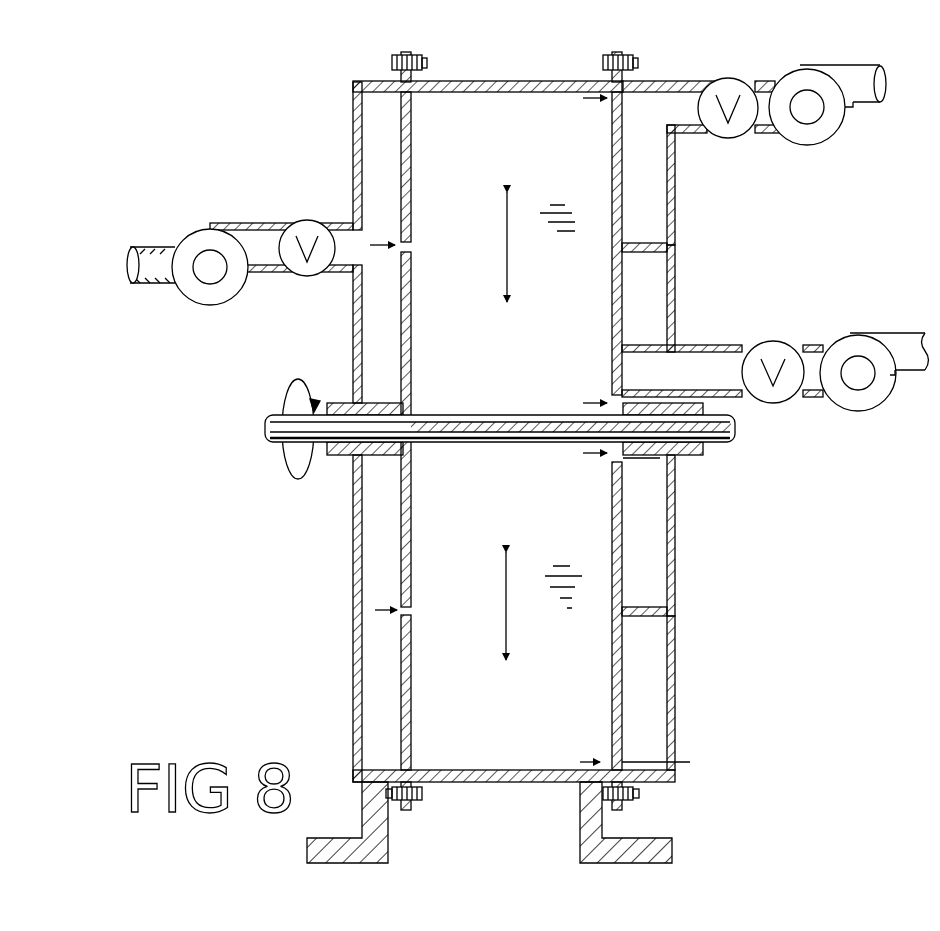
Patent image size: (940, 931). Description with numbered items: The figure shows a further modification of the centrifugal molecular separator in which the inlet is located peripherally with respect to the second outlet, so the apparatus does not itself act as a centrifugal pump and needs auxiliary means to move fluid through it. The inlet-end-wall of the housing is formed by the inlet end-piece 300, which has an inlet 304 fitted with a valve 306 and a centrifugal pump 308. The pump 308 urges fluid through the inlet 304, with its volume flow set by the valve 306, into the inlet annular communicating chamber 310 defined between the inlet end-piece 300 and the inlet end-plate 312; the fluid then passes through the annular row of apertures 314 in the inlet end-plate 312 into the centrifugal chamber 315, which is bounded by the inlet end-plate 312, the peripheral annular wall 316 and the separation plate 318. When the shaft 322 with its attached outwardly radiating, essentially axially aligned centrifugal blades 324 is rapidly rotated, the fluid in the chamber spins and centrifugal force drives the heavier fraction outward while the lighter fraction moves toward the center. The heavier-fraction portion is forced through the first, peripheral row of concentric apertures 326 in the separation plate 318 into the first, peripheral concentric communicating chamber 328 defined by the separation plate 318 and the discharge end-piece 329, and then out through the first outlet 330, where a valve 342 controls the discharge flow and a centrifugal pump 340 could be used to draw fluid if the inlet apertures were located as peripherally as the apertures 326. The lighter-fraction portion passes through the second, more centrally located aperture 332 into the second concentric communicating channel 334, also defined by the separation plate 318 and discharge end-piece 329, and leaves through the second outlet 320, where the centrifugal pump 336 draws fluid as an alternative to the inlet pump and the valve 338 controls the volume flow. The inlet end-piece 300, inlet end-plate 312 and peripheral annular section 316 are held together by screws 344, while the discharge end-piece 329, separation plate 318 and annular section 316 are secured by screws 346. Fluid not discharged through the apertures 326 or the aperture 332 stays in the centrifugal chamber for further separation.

The inlet end-piece 300 is at (353, 138).
The inlet 304 is at (345, 240).
The valve 306 is at (300, 273).
The centrifugal pump 308 is at (190, 240).
The inlet annular communicating chamber 310 is at (380, 298).
The inlet end-plate 312 is at (405, 565).
The annular row of apertures 314 is at (398, 615).
The centrifugal chamber 315 is at (565, 342).
The peripheral annular wall 316 is at (515, 82).
The separation plate 318 is at (620, 189).
The second outlet 320 is at (695, 362).
The shaft 322 is at (735, 432).
The centrifugal blades 324 is at (437, 487).
The first, peripheral row of concentric apertures 326 is at (618, 95).
The first, peripheral concentric communicating chamber 328 is at (655, 162).
The discharge end-piece 329 is at (672, 272).
The first outlet 330 is at (685, 93).
The second, more centrally located aperture 332 is at (618, 455).
The second concentric communicating channel 334 is at (655, 550).
The centrifugal pump 336 is at (880, 398).
The valve 338 is at (770, 348).
The centrifugal pump 340 is at (832, 128).
The valve 342 is at (745, 132).
The screws 344 is at (420, 792).
The screws 346 is at (632, 792).